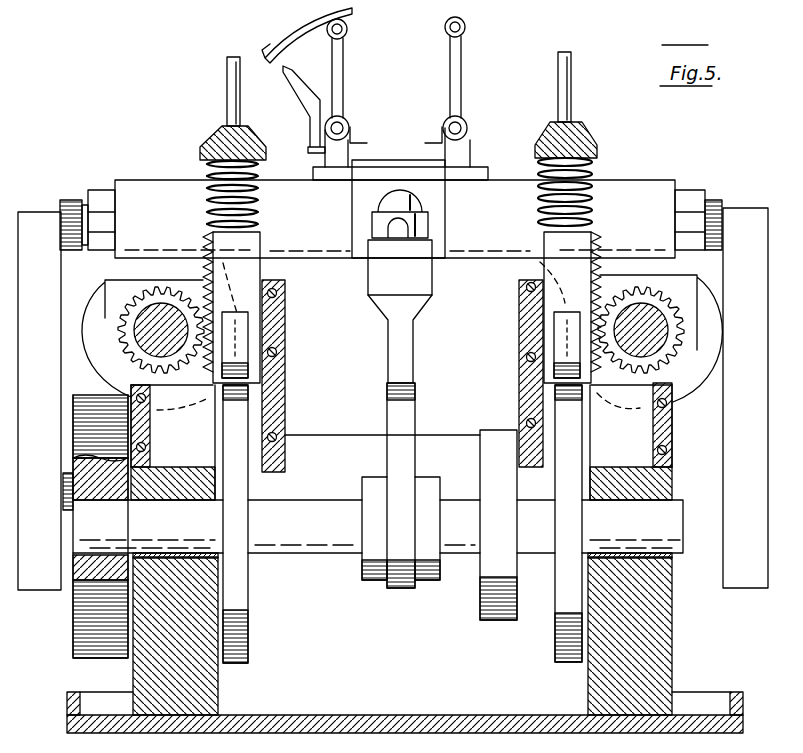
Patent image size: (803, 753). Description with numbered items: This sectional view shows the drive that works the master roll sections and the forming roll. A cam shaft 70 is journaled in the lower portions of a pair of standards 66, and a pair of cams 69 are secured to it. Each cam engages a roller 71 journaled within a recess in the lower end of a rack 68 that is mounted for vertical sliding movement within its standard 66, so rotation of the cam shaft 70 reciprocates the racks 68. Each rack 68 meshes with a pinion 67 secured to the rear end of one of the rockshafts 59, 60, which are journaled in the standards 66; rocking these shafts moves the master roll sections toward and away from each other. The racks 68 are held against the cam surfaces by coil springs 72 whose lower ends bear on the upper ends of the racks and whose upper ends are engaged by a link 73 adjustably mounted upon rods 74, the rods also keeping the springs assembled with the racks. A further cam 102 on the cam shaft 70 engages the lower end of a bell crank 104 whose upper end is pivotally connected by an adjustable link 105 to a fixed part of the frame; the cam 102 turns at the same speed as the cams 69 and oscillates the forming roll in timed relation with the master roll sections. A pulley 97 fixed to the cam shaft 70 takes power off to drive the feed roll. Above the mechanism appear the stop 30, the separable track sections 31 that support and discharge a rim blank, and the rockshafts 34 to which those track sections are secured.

The stop 30 is at (300, 22).
The track sections 31 is at (410, 130).
The rockshafts 34 is at (345, 118).
The rockshaft 59 is at (150, 342).
The rockshaft 60 is at (648, 347).
The standards 66 is at (208, 692).
The pinions 67 is at (127, 320).
The racks 68 is at (286, 302).
The cams 69 is at (252, 489).
The cam shaft 70 is at (318, 545).
The rollers 71 is at (262, 345).
The coil springs 72 is at (589, 185).
The link 73 is at (580, 135).
The rods 74 is at (572, 88).
The pulley 97 is at (480, 620).
The cam 102 is at (398, 590).
The bell crank 104 is at (410, 356).
The adjustable link 105 is at (425, 216).